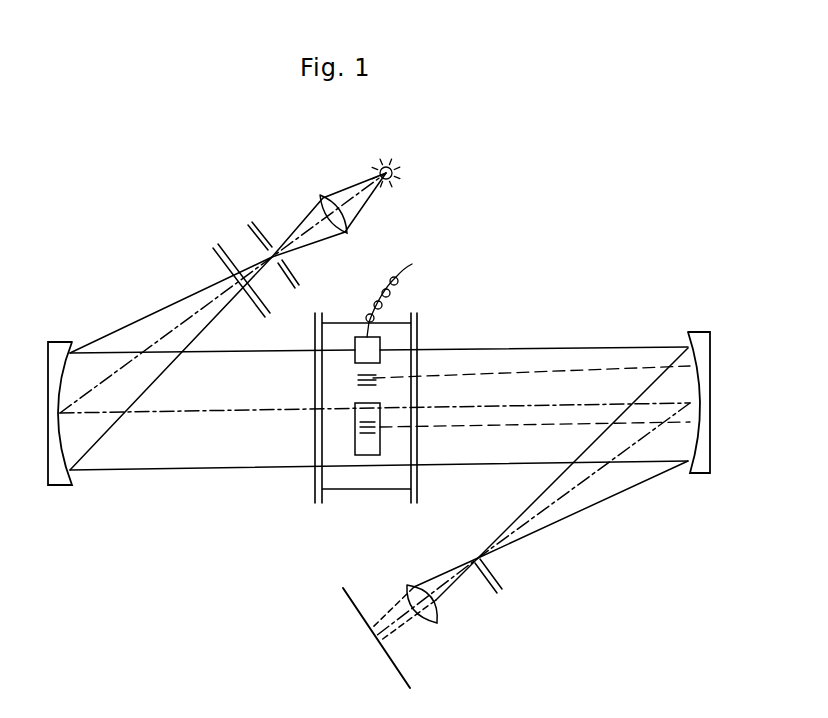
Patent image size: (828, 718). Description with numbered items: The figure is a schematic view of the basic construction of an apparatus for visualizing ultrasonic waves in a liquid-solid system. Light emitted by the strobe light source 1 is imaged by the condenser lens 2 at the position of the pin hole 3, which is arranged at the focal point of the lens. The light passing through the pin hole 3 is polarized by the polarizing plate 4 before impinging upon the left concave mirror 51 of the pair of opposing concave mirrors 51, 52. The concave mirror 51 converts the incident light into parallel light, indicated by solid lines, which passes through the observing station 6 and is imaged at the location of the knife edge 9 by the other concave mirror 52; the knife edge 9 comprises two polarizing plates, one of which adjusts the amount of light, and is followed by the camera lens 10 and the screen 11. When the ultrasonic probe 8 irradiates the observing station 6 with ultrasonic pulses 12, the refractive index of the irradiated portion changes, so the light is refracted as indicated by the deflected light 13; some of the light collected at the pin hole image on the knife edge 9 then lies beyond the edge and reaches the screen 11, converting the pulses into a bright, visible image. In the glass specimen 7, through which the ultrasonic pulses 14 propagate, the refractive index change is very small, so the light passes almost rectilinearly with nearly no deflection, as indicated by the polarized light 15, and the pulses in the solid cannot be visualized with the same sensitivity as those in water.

The strobe light source 1 is at (384, 165).
The condenser lens 2 is at (324, 199).
The pin hole 3 is at (256, 224).
The polarizing plate 4 is at (222, 247).
The concave mirror 51 is at (66, 340).
The concave mirror 52 is at (702, 331).
The observing station 6 is at (370, 489).
The glass specimen 7 is at (355, 420).
The ultrasonic probe 8 is at (364, 336).
The knife edge 9 is at (493, 580).
The camera lens 10 is at (410, 585).
The screen 11 is at (395, 665).
The ultrasonic pulses 12 is at (373, 373).
The deflected light 13 is at (530, 373).
The ultrasonic pulses 14 is at (370, 437).
The polarized light 15 is at (510, 428).